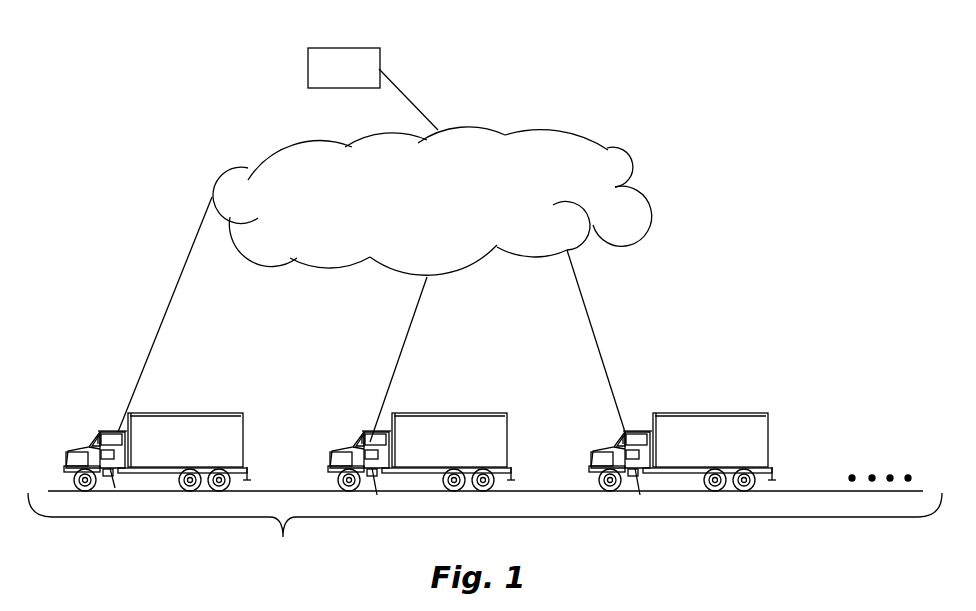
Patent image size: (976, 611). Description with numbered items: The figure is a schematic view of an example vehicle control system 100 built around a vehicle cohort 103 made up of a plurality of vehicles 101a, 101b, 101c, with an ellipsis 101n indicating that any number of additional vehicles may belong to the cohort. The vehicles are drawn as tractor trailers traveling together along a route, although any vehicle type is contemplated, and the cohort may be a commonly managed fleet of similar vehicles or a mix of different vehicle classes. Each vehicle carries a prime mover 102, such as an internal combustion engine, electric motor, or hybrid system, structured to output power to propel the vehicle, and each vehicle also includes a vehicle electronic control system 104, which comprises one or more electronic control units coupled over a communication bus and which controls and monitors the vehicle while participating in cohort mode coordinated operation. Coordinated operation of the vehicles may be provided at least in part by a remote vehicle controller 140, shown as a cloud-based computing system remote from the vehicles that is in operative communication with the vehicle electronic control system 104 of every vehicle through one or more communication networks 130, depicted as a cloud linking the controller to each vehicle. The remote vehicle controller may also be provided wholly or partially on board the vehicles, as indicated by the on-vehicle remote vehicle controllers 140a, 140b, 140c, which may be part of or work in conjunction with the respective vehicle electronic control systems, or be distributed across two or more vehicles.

The vehicle control system 100 is at (742, 112).
The vehicle 101a is at (248, 390).
The vehicle 101b is at (506, 390).
The vehicle 101c is at (771, 390).
The ellipsis denoting additional vehicles 101n is at (872, 473).
The prime mover 102 is at (98, 450).
The vehicle cohort 103 is at (485, 525).
The vehicle electronic control system (VECS) 104 is at (380, 490).
The communication network 130 is at (257, 157).
The remote vehicle controller (RVC) 140 is at (308, 62).
The remote vehicle controller 140a is at (70, 463).
The remote vehicle controller 140b is at (333, 452).
The remote vehicle controller 140c is at (590, 467).